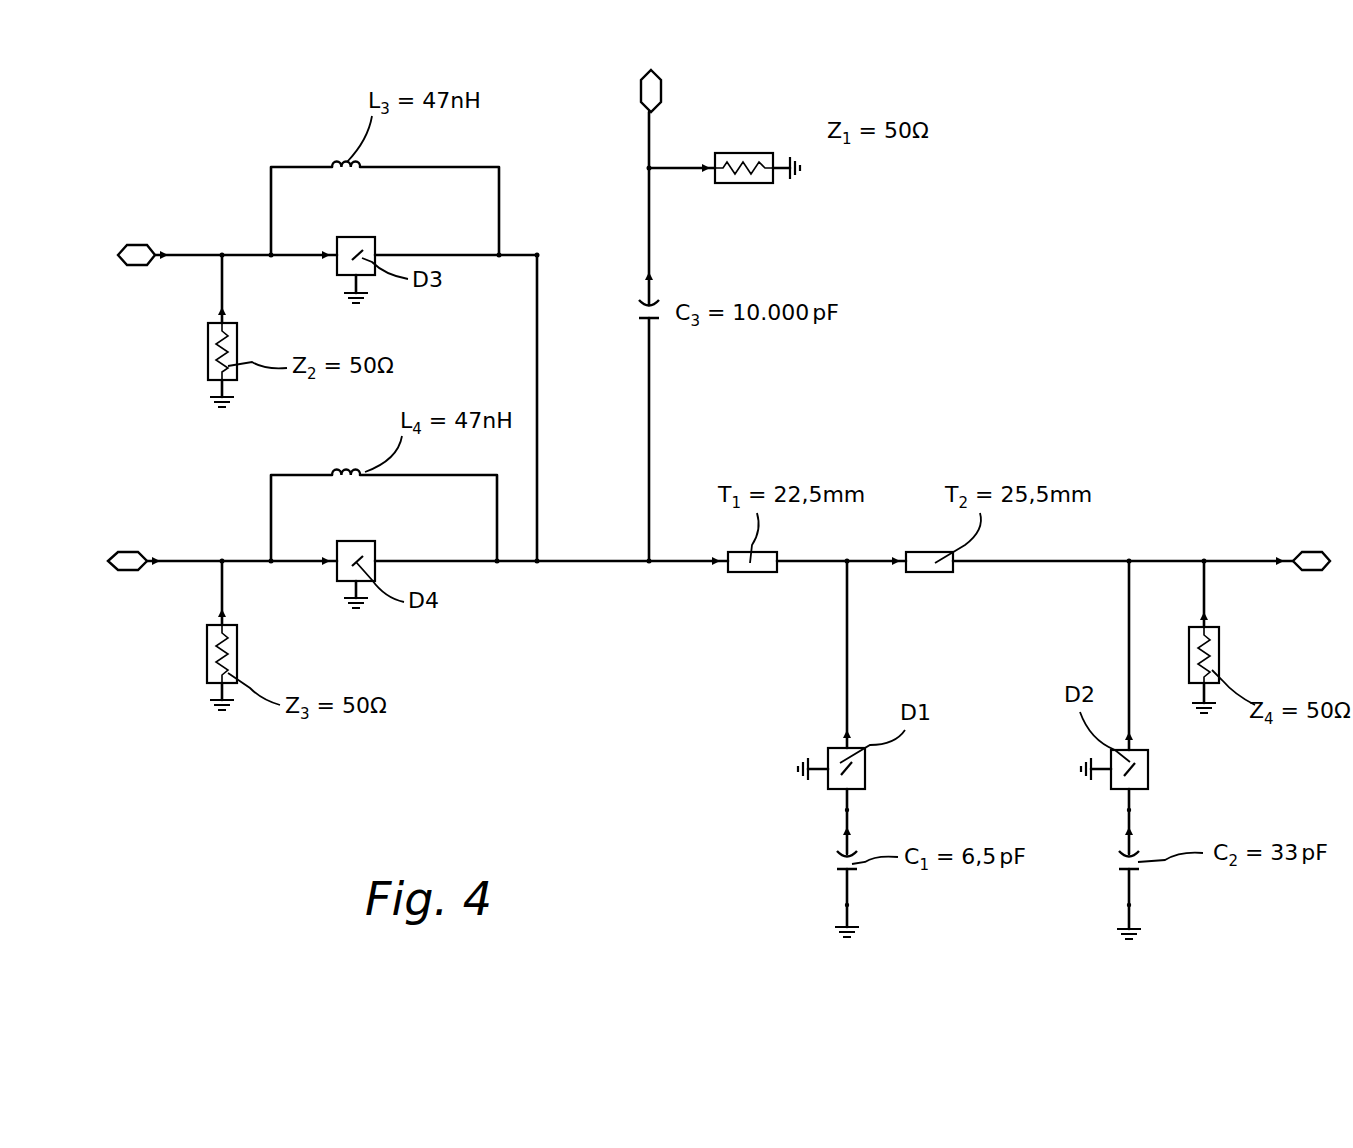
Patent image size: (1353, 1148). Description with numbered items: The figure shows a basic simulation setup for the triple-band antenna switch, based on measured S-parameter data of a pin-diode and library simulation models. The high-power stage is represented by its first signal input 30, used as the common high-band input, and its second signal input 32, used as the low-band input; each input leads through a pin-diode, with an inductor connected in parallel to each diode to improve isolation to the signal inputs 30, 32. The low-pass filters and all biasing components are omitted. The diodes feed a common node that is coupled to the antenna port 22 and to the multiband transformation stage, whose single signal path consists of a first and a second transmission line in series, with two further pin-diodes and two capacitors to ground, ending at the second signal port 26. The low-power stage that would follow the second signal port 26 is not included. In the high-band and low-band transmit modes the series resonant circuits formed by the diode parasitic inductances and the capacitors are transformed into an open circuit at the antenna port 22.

The antenna port 22 is at (651, 90).
The second signal port 26 is at (1305, 556).
The first signal input 30 is at (142, 254).
The second signal input 32 is at (130, 560).